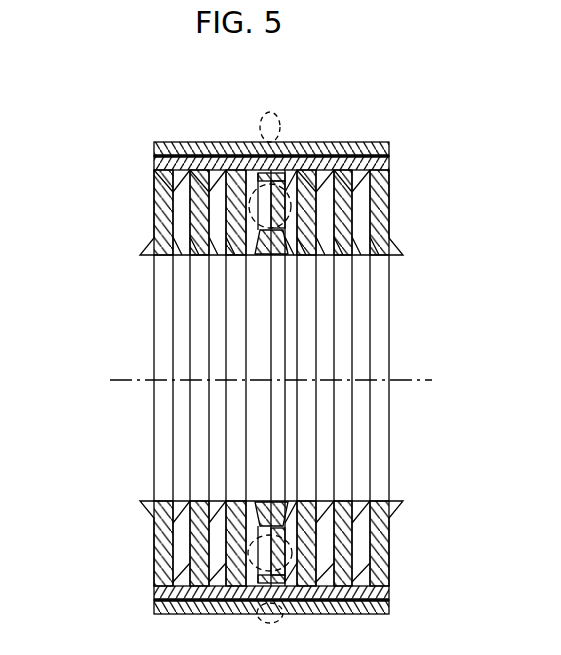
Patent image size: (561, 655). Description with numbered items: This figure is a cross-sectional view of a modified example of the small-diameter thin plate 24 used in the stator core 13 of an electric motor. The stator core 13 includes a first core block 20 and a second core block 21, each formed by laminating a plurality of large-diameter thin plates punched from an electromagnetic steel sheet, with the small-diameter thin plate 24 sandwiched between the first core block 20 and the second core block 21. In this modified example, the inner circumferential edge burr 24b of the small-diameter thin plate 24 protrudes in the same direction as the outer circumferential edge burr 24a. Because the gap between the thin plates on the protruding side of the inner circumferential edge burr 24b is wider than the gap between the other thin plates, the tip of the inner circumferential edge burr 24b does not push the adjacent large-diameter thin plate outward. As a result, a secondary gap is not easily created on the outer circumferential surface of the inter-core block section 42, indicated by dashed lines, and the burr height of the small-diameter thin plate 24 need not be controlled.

The stator core 13 is at (427, 131).
The first core block 20 is at (262, 123).
The second core block 21 is at (388, 123).
The small-diameter thin plate 24 is at (266, 135).
The outer circumferential edge burr 24a is at (262, 182).
The inner circumferential edge burr 24b is at (288, 252).
The inter-core block section 42 is at (258, 210).